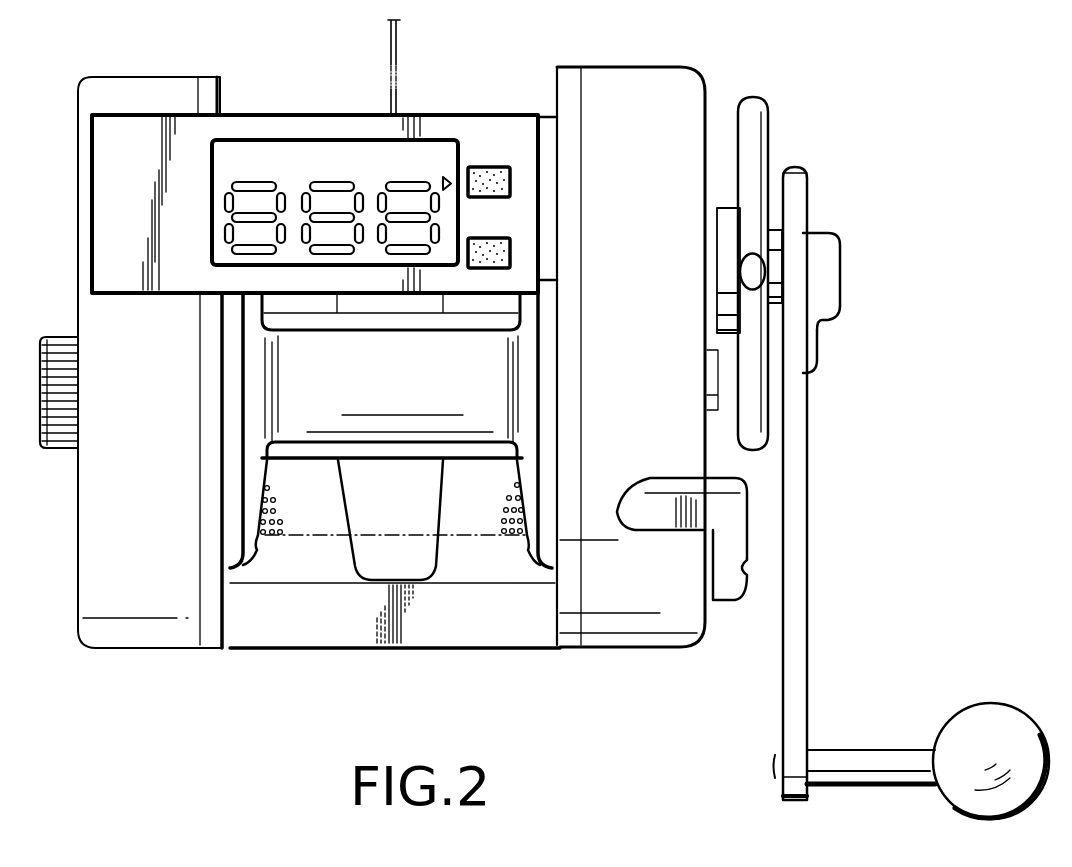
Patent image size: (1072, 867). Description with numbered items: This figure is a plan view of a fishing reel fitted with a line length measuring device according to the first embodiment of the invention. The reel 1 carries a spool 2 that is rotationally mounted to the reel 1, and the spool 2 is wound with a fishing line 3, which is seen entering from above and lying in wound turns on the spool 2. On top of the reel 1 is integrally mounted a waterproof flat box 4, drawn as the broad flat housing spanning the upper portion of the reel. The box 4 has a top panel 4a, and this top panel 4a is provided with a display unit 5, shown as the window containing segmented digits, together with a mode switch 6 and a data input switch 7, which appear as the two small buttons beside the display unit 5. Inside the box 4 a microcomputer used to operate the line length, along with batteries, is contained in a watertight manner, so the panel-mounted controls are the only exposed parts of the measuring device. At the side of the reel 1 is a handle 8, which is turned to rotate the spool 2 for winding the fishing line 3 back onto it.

The reel 1 is at (138, 84).
The spool 2 is at (300, 440).
The fishing line 3 is at (400, 62).
The waterproof flat box 4 is at (267, 121).
The top panel 4a is at (172, 276).
The display unit 5 is at (440, 148).
The mode switch 6 is at (488, 167).
The data input switch 7 is at (489, 269).
The handle 8 is at (798, 568).